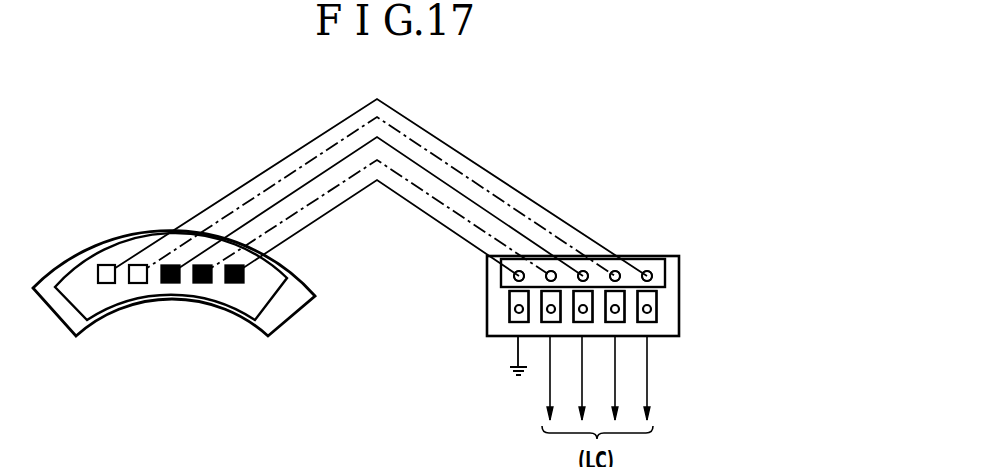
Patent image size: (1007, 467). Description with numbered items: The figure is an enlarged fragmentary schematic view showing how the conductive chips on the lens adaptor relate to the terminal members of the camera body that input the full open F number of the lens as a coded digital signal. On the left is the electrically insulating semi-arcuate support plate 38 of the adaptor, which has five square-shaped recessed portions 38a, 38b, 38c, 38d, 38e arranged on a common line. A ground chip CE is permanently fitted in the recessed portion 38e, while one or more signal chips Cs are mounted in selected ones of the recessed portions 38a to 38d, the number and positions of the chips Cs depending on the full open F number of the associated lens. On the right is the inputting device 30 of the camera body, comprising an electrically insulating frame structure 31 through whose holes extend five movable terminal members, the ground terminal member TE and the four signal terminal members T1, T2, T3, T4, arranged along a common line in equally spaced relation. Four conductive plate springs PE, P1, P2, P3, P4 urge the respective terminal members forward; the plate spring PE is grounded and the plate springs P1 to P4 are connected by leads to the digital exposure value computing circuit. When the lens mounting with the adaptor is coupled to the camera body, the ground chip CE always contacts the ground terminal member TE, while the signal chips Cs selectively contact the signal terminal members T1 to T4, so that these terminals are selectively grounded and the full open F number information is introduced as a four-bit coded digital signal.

The inputting device 30 is at (681, 256).
The electrically insulating frame structure 31 is at (660, 280).
The electrically insulating semi-arcuate support plate 38 is at (98, 301).
The recessed portion 38a is at (197, 285).
The recessed portion 38b is at (167, 284).
The recessed portion 38c is at (138, 272).
The recessed portion 38d is at (107, 272).
The recessed portion 38e is at (228, 287).
The signal chip Cs is at (173, 284).
The ground chip CE is at (240, 285).
The ground terminal member TE is at (519, 272).
The signal terminal member T1 is at (551, 272).
The signal terminal member T2 is at (583, 271).
The signal terminal member T3 is at (615, 271).
The signal terminal member T4 is at (647, 271).
The conductive plate spring PE is at (510, 307).
The conductive plate spring P1 is at (541, 297).
The conductive plate spring P2 is at (576, 297).
The conductive plate spring P3 is at (605, 297).
The conductive plate spring P4 is at (637, 297).